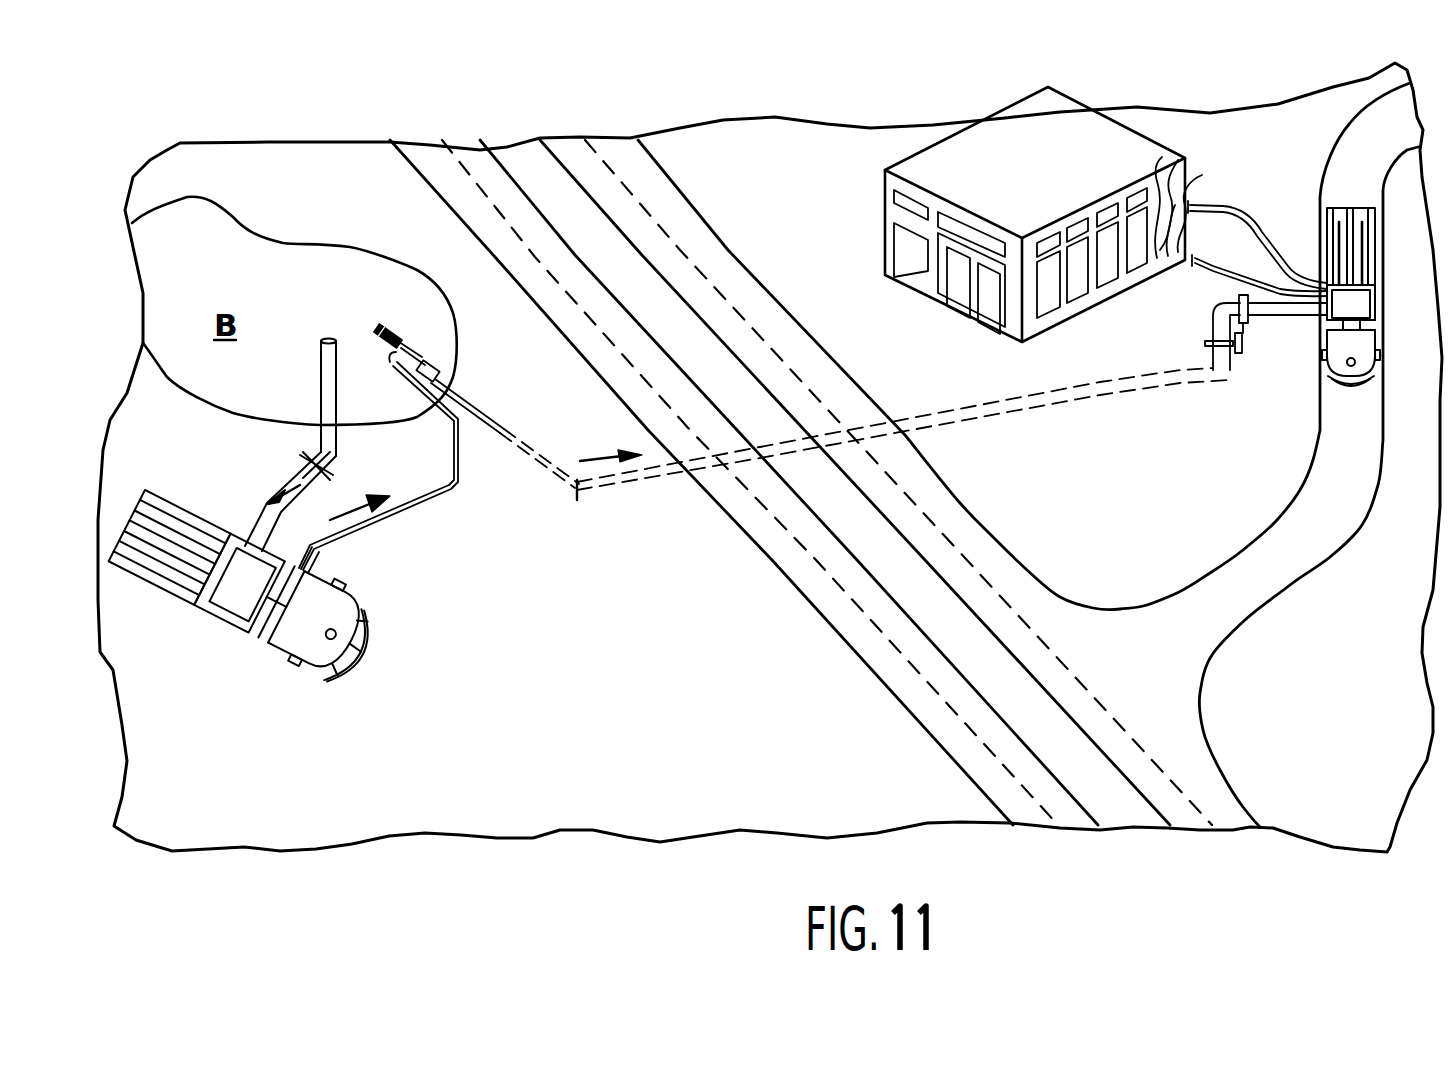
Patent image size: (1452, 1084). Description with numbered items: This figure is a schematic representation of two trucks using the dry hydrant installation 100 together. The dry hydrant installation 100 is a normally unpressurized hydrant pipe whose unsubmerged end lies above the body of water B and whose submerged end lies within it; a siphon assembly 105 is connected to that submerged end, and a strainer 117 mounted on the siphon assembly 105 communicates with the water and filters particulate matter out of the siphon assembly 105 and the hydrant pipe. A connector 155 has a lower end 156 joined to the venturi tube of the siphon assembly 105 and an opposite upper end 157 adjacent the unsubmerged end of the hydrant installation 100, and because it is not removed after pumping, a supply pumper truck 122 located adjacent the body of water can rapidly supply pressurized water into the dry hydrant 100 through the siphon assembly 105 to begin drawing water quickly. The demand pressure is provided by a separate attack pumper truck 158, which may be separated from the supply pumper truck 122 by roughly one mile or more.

The dry hydrant installation 100 is at (575, 495).
The siphon assembly 105 is at (410, 330).
The strainer 117 is at (380, 333).
The supply pumper truck 122 is at (282, 698).
The connector 155 is at (386, 518).
The lower end 156 is at (394, 366).
The upper end 157 is at (308, 554).
The attack pumper truck 158 is at (1290, 358).